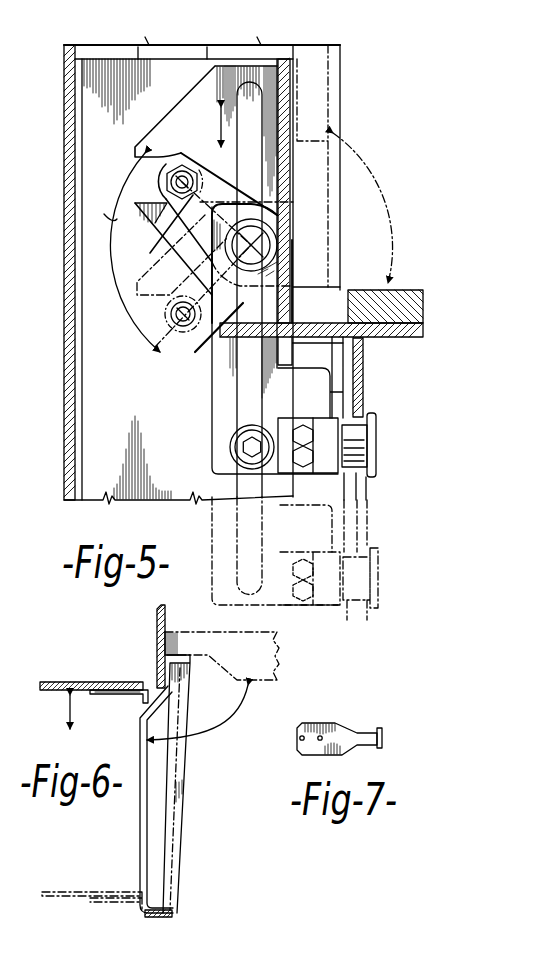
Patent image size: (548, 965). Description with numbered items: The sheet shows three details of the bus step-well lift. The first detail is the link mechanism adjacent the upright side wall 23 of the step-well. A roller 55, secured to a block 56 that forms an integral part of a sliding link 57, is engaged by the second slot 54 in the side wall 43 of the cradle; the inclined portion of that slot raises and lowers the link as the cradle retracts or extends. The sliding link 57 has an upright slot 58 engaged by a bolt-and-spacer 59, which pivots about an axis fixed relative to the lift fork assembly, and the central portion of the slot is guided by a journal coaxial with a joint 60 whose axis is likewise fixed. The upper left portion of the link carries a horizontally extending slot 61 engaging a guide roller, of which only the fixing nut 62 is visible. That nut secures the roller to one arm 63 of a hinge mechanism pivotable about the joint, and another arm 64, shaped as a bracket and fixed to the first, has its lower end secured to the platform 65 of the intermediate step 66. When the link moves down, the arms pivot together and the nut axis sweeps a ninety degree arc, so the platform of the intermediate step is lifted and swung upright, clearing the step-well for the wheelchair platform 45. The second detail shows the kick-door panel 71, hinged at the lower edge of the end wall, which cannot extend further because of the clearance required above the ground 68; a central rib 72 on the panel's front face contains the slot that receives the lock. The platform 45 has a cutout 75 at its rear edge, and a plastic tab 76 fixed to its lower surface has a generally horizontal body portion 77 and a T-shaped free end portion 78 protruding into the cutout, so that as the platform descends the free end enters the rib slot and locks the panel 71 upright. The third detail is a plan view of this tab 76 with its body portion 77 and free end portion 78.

In FIG. 5, the side wall 23 is at (340, 118).
In FIG. 5, the side wall of cradle 43 is at (364, 367).
In FIG. 6, the platform 45 is at (58, 682).
In FIG. 5, the second slot 54 is at (364, 432).
In FIG. 5, the roller 55 is at (360, 447).
In FIG. 5, the block 56 is at (327, 463).
In FIG. 5, the sliding link 57 is at (233, 428).
In FIG. 5, the upright slot 58 is at (243, 424).
In FIG. 5, the bolt-and-spacer 59 is at (236, 458).
In FIG. 5, the joint 60 is at (258, 248).
In FIG. 5, the horizontally extending slot 61 is at (150, 201).
In FIG. 5, the fixing nut 62 is at (186, 157).
In FIG. 5, the arm of hinge mechanism 63 is at (244, 229).
In FIG. 5, the arm of hinge mechanism 64 is at (210, 340).
In FIG. 5, the platform of intermediate step 65 is at (398, 338).
In FIG. 5, the intermediate step 66 is at (424, 280).
In FIG. 6, the ground 68 is at (158, 672).
In FIG. 6, the kick-door panel 71 is at (165, 804).
In FIG. 6, the central rib 72 is at (141, 722).
In FIG. 6, the cutout 75 is at (132, 683).
In FIG. 6, the plastic tab 76 is at (128, 698).
In FIG. 7, the plastic tab 76 is at (338, 719).
In FIG. 7, the body portion 77 is at (302, 725).
In FIG. 7, the free end portion 78 is at (383, 732).